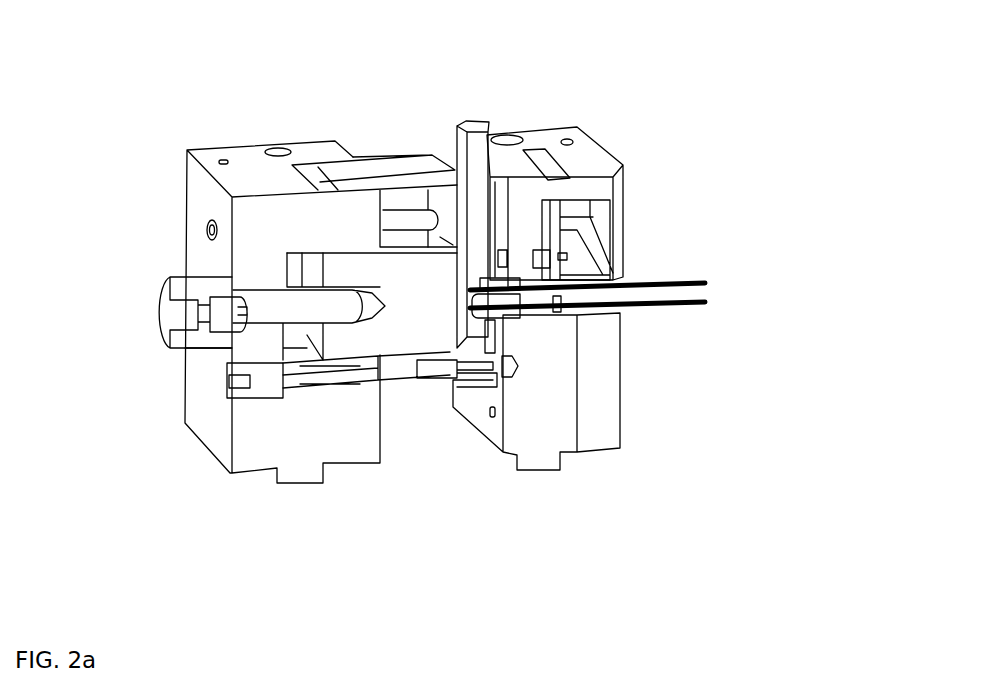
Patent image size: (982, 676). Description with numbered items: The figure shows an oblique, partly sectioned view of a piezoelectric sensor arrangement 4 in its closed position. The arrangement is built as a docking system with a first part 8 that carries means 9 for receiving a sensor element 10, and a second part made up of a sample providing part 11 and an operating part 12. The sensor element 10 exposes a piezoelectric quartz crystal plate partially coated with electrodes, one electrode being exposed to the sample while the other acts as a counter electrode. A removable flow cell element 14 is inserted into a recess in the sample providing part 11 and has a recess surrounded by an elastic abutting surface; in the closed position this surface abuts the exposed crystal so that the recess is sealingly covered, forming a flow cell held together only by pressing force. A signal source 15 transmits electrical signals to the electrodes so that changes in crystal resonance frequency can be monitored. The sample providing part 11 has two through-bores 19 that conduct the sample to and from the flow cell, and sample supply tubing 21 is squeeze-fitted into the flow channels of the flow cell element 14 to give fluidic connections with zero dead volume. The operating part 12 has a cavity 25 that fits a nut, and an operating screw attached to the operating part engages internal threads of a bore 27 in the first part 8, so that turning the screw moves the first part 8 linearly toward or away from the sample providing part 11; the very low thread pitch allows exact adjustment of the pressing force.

The piezoelectric sensor arrangement 4 is at (647, 120).
The first part 8 is at (402, 332).
The means for receiving a sensor element 9 is at (450, 207).
The sensor element 10 is at (480, 118).
The sample providing part 11 is at (534, 425).
The operating part 12 is at (280, 225).
The flow cell element 14 is at (495, 303).
The signal source 15 is at (555, 228).
The through-bores 19 is at (557, 310).
The sample supply tubing 21 is at (690, 277).
The cavity 25 is at (297, 268).
The bore 27 is at (372, 302).